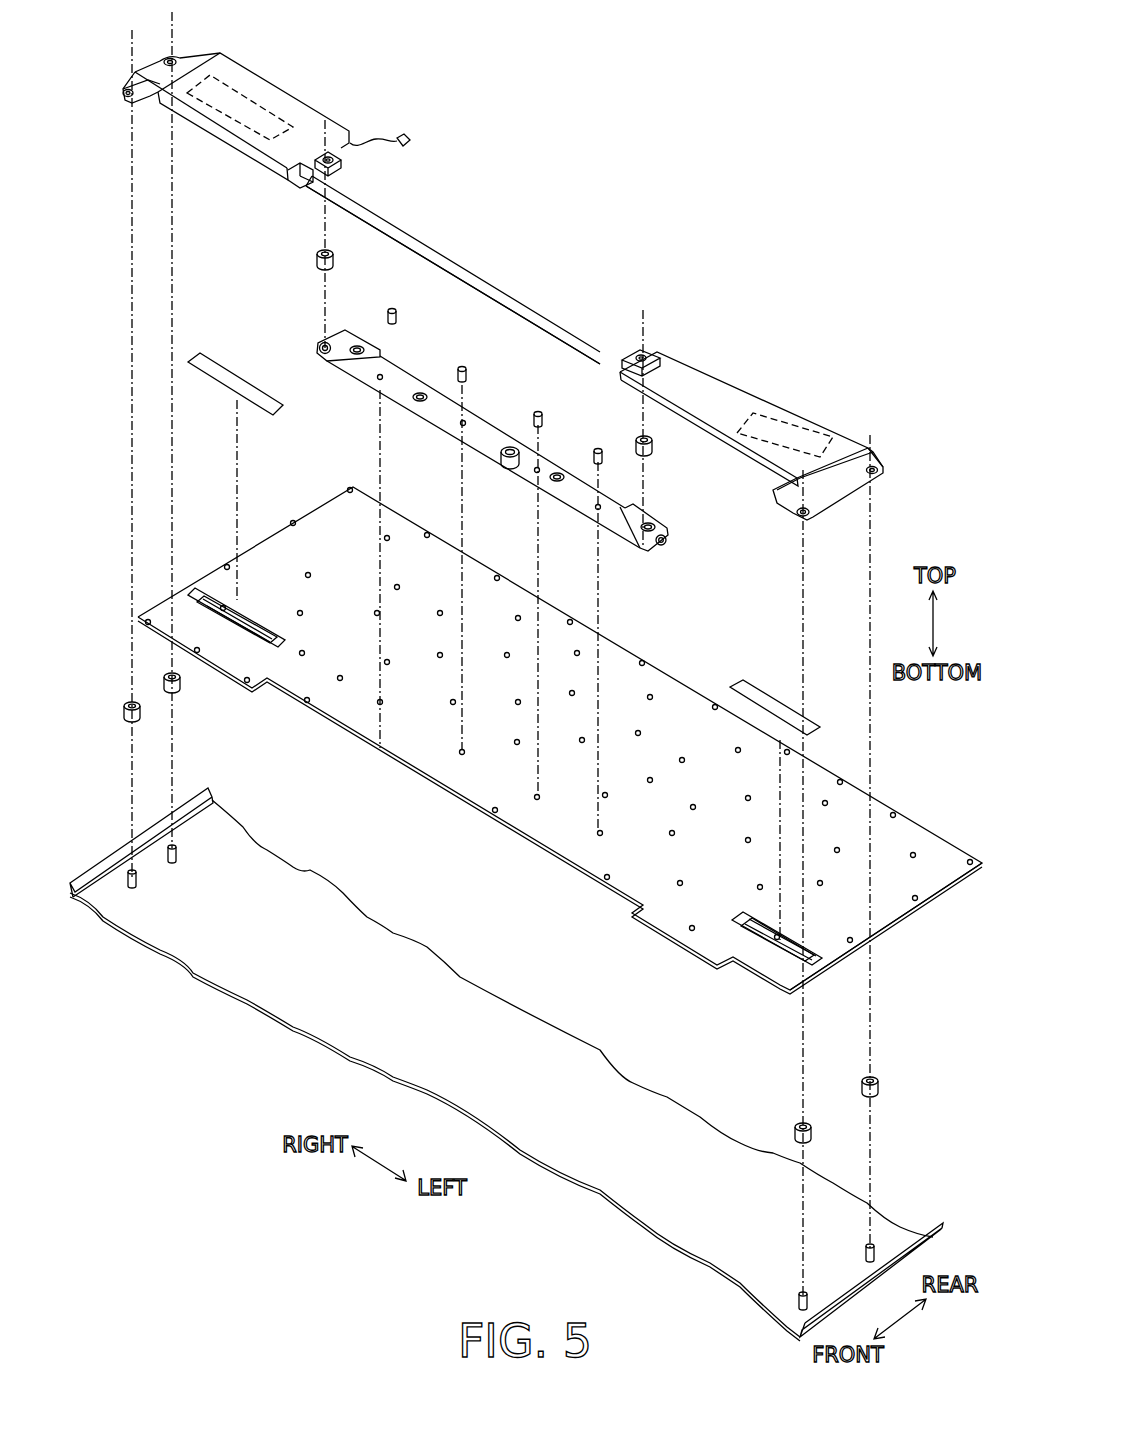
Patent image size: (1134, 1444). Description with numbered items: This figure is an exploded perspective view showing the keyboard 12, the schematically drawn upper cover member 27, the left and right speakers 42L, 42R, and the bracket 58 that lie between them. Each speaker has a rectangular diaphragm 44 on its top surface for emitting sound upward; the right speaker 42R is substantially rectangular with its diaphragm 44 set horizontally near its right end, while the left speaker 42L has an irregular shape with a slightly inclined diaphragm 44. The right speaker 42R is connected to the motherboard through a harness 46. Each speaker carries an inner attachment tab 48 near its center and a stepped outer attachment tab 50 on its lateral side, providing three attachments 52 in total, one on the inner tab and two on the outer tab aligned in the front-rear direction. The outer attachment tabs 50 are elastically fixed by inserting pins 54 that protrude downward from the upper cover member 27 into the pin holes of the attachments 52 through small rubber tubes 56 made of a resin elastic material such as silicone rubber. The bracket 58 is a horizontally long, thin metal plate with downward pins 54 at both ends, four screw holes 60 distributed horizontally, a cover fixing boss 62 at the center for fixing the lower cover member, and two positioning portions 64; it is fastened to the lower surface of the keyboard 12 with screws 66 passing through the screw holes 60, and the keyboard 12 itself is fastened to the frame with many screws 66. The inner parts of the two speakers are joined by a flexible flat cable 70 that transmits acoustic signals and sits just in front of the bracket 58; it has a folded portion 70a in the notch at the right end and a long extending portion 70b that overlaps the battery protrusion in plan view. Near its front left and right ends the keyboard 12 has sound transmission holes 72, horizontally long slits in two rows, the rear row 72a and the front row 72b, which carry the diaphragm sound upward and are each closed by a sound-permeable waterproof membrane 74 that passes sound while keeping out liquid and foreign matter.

The keyboard 12 is at (682, 635).
The upper cover member 27 is at (700, 1245).
The right speaker 42R is at (290, 102).
The left speaker 42L is at (723, 396).
The diaphragm 44 is at (232, 78).
The harness 46 is at (378, 135).
The inner attachment tab 48 is at (341, 160).
The outer attachment tab 50 is at (150, 66).
The attachment 52 is at (178, 60).
The pin 54 is at (320, 344).
The rubber tube 56 is at (334, 258).
The bracket 58 is at (622, 557).
The screw hole 60 is at (372, 378).
The cover fixing boss 62 is at (509, 446).
The positioning portion 64 is at (420, 393).
The screw 66 is at (393, 308).
The flat cable 70 is at (470, 268).
The folded portion 70a is at (295, 180).
The long extending portion 70b is at (453, 275).
The sound transmission holes 72 is at (505, 753).
The rear row of sound transmission holes 72a is at (213, 633).
The front row of sound transmission holes 72b is at (273, 650).
The sound-permeable waterproof membrane 74 is at (240, 380).